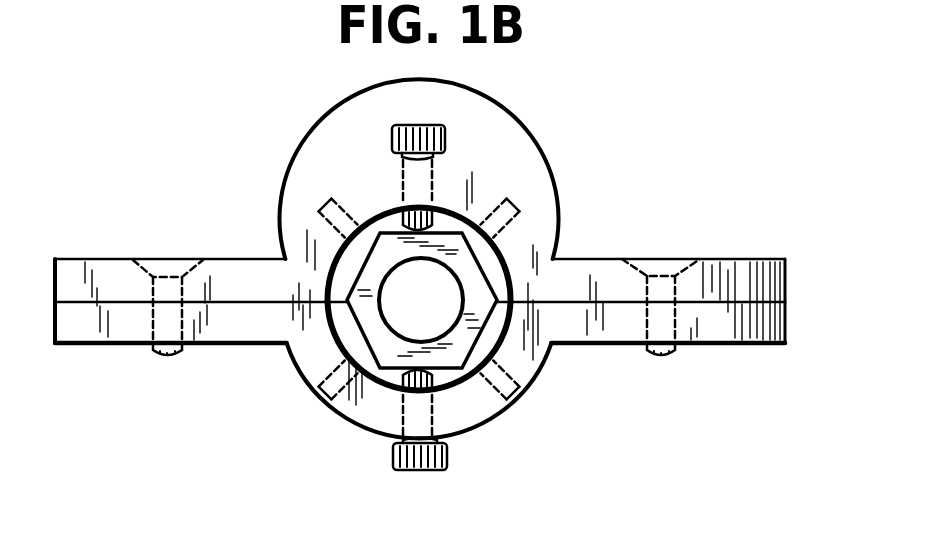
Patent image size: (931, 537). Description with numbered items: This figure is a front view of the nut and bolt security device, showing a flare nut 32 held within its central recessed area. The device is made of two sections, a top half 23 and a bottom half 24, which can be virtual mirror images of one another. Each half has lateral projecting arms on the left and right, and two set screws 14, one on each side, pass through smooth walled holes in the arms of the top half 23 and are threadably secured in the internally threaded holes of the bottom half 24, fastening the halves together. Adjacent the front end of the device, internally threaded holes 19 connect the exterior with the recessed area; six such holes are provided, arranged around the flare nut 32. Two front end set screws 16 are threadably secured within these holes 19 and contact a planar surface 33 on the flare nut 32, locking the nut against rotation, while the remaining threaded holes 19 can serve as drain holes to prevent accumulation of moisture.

The set screw 14 is at (155, 258).
The front end set screw 16 is at (445, 134).
The internally threaded hole 19 is at (325, 193).
The top half 23 is at (785, 278).
The bottom half 24 is at (785, 331).
The flare nut 32 is at (472, 218).
The planar surface 33 is at (389, 369).